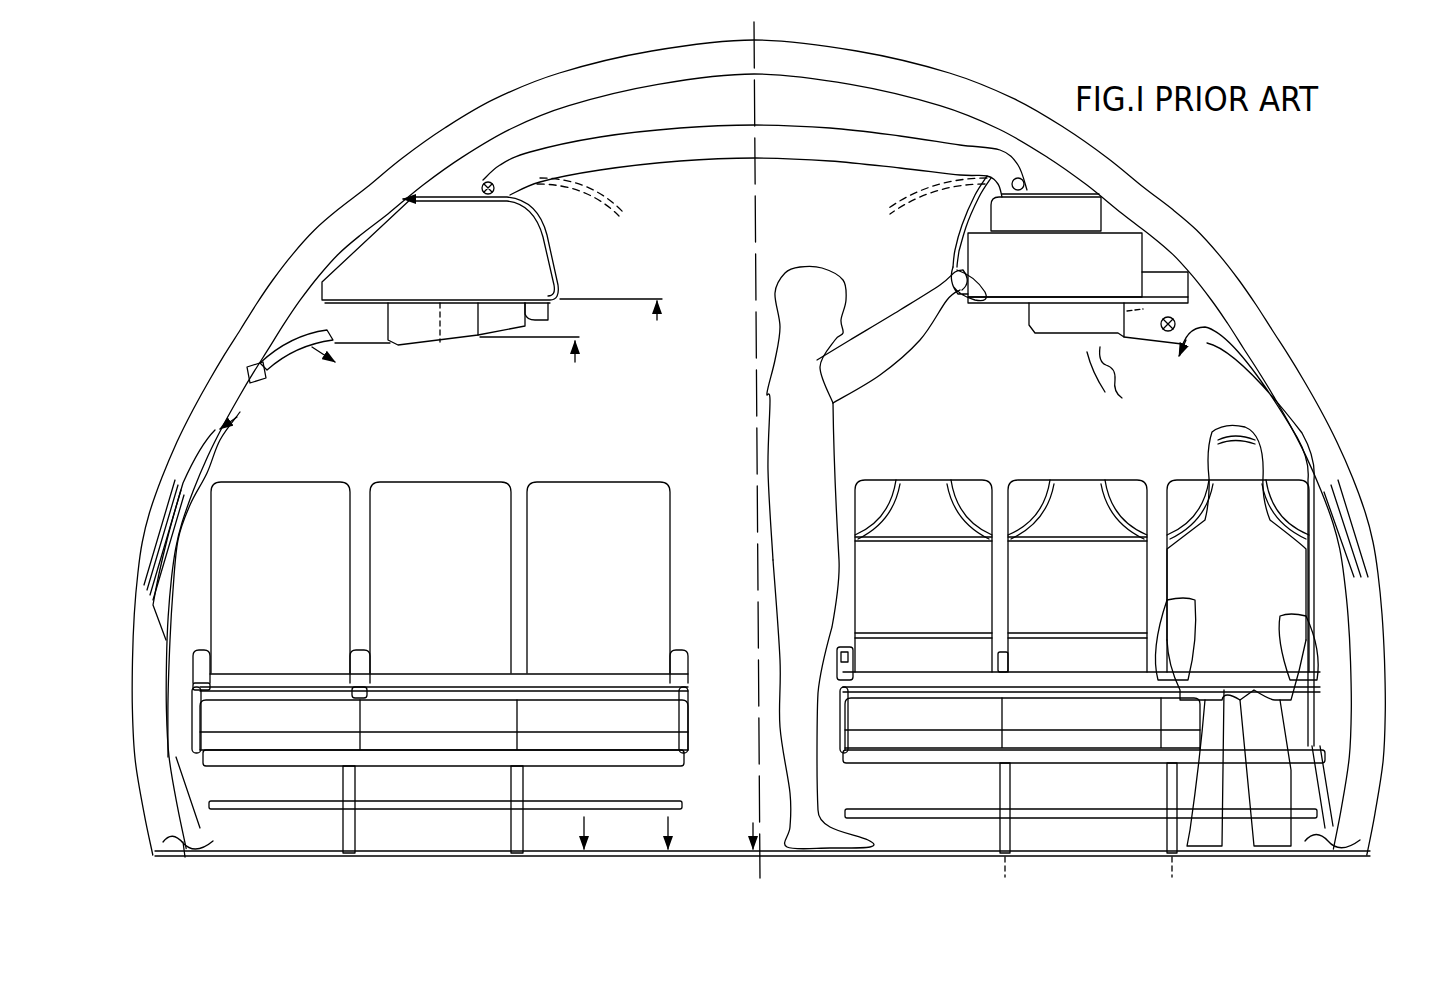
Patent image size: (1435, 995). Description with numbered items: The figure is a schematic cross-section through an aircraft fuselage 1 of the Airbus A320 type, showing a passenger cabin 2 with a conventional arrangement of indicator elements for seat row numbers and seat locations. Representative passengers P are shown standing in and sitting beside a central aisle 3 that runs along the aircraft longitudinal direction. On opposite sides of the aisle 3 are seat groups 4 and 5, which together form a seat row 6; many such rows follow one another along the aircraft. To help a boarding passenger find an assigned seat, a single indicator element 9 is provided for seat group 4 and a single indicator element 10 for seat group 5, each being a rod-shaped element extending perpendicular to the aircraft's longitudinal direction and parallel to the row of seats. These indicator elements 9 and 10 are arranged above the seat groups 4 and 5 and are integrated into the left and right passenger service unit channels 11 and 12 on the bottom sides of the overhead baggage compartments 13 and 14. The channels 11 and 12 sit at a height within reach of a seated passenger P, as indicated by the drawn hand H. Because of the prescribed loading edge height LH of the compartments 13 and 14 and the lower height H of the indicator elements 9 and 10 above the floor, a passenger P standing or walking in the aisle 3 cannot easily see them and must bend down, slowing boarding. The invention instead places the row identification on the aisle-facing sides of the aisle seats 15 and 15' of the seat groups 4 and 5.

The aircraft fuselage 1 is at (290, 199).
The passenger cabin 2 is at (270, 417).
The central aisle 3 is at (749, 770).
The seat group 4 is at (454, 626).
The seat group 5 is at (1081, 638).
The seat row 6 is at (1288, 498).
The indicator element 9 is at (419, 345).
The indicator element 10 is at (1056, 339).
The passenger service unit channel 11 is at (478, 322).
The passenger service unit channel 12 is at (1029, 328).
The overhead baggage compartment 13 is at (540, 261).
The overhead baggage compartment 14 is at (991, 258).
The aisle seat 15 is at (463, 577).
The aisle seat 15' is at (1001, 556).
The height of the indicator elements H is at (1128, 375).
The loading edge height LH is at (629, 323).
The passenger P is at (763, 392).